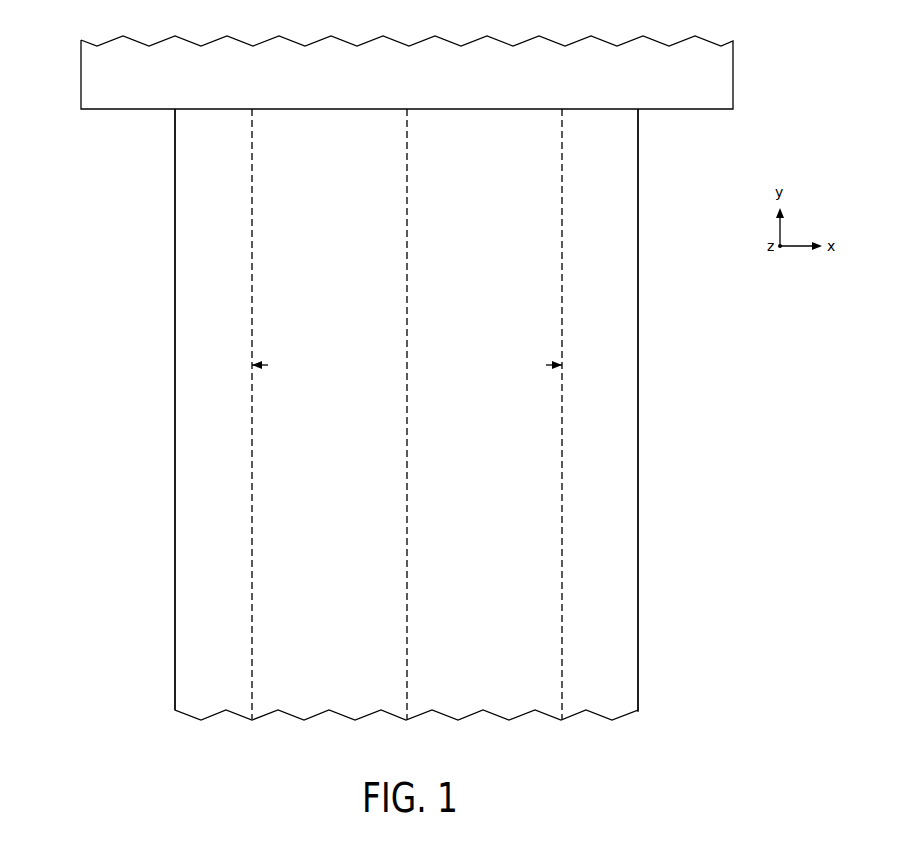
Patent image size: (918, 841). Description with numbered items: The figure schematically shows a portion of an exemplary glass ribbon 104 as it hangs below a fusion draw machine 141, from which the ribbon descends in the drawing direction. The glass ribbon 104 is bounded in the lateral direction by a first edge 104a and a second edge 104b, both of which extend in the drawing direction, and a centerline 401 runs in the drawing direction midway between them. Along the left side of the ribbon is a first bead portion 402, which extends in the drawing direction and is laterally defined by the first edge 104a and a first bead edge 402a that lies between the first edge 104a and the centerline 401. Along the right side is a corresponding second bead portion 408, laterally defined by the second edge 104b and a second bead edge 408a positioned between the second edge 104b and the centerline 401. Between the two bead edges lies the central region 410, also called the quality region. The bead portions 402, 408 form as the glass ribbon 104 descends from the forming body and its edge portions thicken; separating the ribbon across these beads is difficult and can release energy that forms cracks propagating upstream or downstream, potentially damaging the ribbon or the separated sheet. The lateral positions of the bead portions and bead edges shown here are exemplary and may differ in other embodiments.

The fusion draw machine 141 is at (733, 75).
The glass ribbon 104 is at (136, 215).
The first edge 104a is at (175, 607).
The second edge 104b is at (638, 606).
The first bead portion 402 is at (238, 427).
The first bead edge 402a is at (252, 285).
The second bead portion 408 is at (631, 427).
The second bead edge 408a is at (562, 245).
The centerline 401 is at (407, 590).
The central region 410 is at (407, 366).